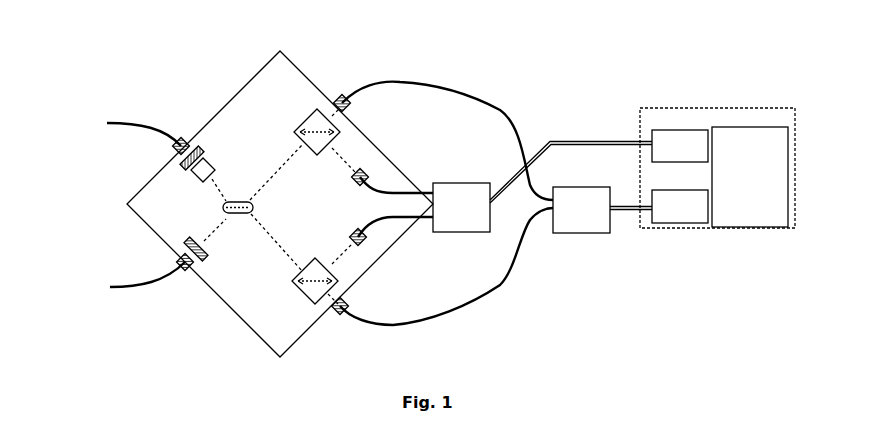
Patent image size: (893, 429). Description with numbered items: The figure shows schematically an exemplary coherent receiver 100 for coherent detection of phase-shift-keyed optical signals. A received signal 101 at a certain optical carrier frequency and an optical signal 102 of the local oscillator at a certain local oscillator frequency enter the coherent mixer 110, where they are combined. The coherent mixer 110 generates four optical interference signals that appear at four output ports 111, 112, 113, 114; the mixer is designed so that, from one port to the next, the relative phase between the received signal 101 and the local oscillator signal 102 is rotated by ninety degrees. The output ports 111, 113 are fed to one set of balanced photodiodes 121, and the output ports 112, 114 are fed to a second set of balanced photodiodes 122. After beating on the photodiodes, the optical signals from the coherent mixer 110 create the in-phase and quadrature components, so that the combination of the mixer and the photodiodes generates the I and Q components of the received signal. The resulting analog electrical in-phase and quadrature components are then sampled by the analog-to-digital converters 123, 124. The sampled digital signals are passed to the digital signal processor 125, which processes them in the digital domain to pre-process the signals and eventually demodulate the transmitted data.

The coherent receiver 100 is at (207, 70).
The received signal 101 is at (147, 290).
The optical signal of the local oscillator 102 is at (137, 117).
The coherent mixer 110 is at (281, 50).
The output port 111 is at (343, 317).
The output port 112 is at (364, 241).
The output port 113 is at (347, 86).
The output port 114 is at (364, 176).
The balanced photodiodes 121 is at (443, 183).
The balanced photodiodes 122 is at (563, 185).
The analog-to-digital converter 123 is at (661, 128).
The analog-to-digital converter 124 is at (669, 190).
The digital signal processor 125 is at (738, 128).